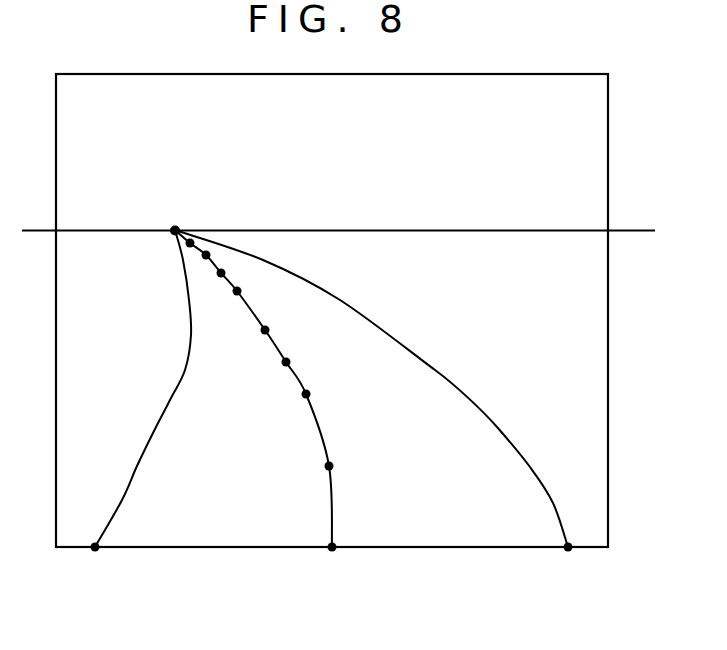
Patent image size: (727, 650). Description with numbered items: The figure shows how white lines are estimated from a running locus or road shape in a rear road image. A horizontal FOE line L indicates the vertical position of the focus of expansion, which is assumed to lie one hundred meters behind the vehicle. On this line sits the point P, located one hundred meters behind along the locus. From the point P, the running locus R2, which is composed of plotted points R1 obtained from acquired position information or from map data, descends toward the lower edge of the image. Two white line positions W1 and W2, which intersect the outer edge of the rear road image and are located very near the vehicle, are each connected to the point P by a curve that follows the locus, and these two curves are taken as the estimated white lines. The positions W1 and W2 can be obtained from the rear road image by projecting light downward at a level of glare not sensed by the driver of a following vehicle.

The point P is at (175, 226).
The FOE line L is at (348, 233).
The white line position W1 is at (95, 552).
The white line position W2 is at (568, 552).
The points R1 is at (308, 396).
The running locus R2 is at (334, 510).